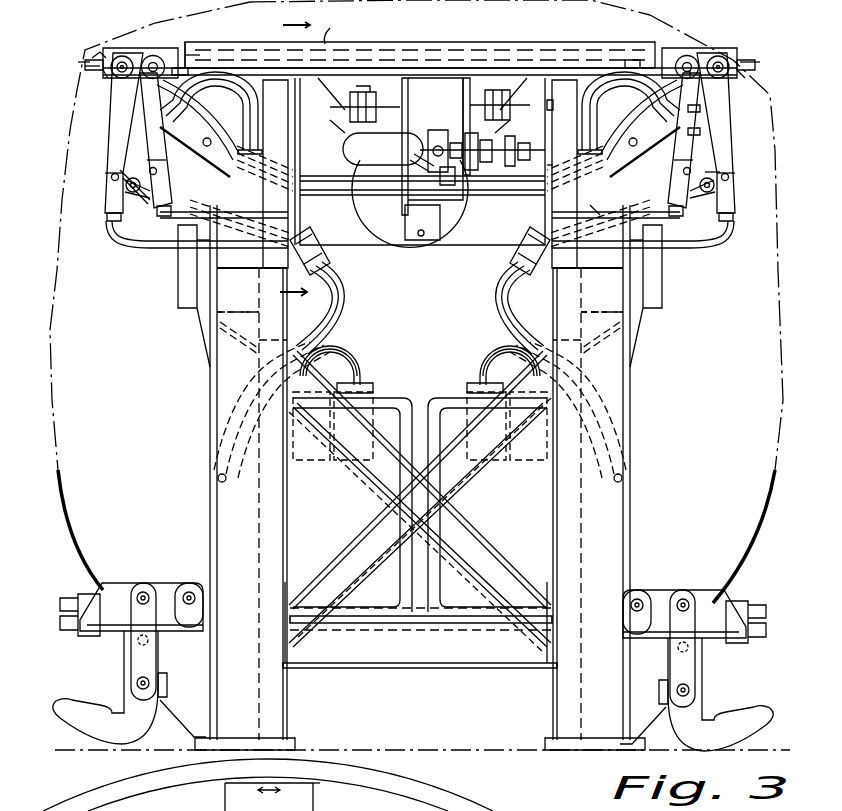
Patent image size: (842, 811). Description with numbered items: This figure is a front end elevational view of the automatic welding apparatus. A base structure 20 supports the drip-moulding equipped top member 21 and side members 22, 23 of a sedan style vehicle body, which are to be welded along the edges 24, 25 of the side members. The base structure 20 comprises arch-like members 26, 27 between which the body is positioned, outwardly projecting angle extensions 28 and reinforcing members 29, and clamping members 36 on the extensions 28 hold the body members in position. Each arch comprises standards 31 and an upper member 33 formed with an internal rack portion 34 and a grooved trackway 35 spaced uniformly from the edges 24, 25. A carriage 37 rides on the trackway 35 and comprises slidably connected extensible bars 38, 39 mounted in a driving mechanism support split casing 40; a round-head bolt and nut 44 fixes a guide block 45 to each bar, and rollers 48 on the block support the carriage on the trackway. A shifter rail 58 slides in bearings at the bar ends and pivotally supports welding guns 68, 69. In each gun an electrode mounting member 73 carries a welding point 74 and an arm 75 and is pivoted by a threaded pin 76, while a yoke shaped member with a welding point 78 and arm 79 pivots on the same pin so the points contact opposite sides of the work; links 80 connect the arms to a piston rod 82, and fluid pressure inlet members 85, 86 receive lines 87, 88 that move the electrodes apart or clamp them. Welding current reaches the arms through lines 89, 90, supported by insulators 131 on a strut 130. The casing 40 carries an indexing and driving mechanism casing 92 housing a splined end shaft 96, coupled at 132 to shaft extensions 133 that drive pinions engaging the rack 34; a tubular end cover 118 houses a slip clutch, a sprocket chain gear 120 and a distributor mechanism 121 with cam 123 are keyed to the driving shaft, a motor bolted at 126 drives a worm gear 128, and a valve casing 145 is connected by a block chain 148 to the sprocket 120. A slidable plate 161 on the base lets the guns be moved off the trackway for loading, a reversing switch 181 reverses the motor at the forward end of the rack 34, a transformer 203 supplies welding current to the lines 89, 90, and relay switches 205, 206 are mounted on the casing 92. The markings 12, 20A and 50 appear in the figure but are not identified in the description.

The hose/cable bundle 12 is at (420, 242).
The base structure 20 is at (556, 755).
The right conduit tube 20A is at (450, 395).
The top member 21 is at (650, 15).
The side member 22 is at (55, 407).
The side member 23 is at (781, 445).
The edge 24 is at (78, 62).
The edge 25 is at (760, 64).
The arch-like member 26 is at (210, 528).
The arch-like member 27 is at (630, 528).
The angle extension 28 is at (190, 738).
The reinforcing member 29 is at (455, 495).
The standard 31 is at (210, 505).
The upper member 33 is at (420, 290).
The internal rack portion 34 is at (268, 88).
The grooved trackway 35 is at (250, 128).
The clamping member 36 is at (82, 740).
The carriage 37 is at (337, 40).
The extensible bar 38 is at (180, 66).
The extensible bar 39 is at (689, 64).
The driving mechanism support split casing 40 is at (408, 42).
The round-head bolt and nut 44 is at (190, 42).
The guide block 45 is at (200, 55).
The roller 48 is at (630, 60).
The bottom cross beam 50 is at (380, 668).
The cylinder head casing support shifter rail 58 is at (157, 56).
The welding gun 68 is at (105, 73).
The welding gun 69 is at (742, 74).
The electrode mounting member 73 is at (120, 48).
The welding electrode 74 is at (95, 56).
The arm 75 is at (170, 185).
The threaded pin 76 is at (118, 80).
The welding electrode 78 is at (90, 68).
The arm 79 is at (108, 145).
The link 80 is at (135, 193).
The gun actuating piston rod 82 is at (720, 172).
The fluid pressure inlet member 85 is at (700, 108).
The fluid pressure inlet member 86 is at (700, 131).
The fluid pressure line 87 is at (178, 120).
The fluid pressure line 88 is at (150, 190).
The electric line 89 is at (160, 248).
The electric line 90 is at (175, 250).
The indexing and driving mechanism casing 92 is at (452, 82).
The splined end shaft 96 is at (400, 107).
The tubular end cover 118 is at (343, 148).
The sprocket chain gear 120 is at (500, 102).
The distributor mechanism 121 is at (562, 165).
The off-set cam 123 is at (562, 105).
The bolt 126 is at (352, 180).
The worm gear 128 is at (445, 210).
The strut 130 is at (365, 247).
The electric insulator 131 is at (335, 272).
The drive coupling 132 is at (363, 99).
The shaft extension 133 is at (451, 136).
The valve casing 145 is at (445, 124).
The block chain 148 is at (410, 160).
The slidable plate 161 is at (178, 296).
The electrical reversing switch 181 is at (592, 218).
The electrical transformer 203 is at (385, 395).
The electric relay switch 205 is at (269, 797).
The electric relay switch 206 is at (301, 796).